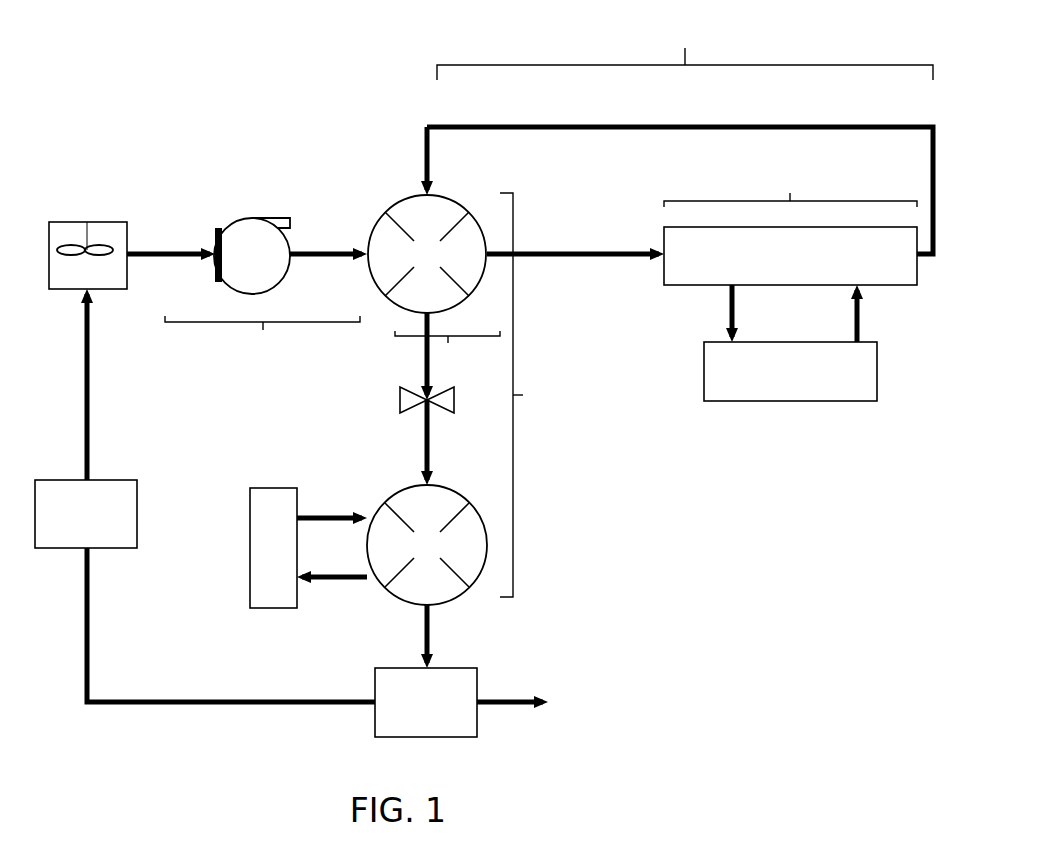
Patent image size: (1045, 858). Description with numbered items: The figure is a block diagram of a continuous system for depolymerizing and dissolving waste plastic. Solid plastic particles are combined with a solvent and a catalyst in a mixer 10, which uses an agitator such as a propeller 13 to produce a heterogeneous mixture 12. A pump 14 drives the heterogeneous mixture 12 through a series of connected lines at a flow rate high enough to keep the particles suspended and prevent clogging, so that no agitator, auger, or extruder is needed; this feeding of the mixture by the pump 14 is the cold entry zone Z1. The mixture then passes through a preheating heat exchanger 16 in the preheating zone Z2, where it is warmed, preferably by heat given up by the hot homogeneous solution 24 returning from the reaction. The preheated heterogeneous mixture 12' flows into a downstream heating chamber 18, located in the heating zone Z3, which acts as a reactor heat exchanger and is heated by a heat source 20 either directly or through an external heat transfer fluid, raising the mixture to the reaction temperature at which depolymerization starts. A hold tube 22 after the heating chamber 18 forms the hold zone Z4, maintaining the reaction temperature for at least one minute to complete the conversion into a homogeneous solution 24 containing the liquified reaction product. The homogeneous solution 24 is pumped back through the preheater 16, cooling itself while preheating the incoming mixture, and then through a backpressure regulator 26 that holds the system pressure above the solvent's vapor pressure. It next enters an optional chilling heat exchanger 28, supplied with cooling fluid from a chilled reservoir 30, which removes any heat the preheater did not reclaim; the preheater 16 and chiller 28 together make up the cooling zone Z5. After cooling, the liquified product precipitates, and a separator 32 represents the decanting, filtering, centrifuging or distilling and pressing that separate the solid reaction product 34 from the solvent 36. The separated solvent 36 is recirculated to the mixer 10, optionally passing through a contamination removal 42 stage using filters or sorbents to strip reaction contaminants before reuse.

The mixer 10 is at (73, 281).
The propeller 13 is at (99, 248).
The heterogeneous mixture 12 is at (247, 230).
The preheated heterogeneous mixture 12' is at (575, 239).
The pump 14 is at (238, 267).
The preheating heat exchanger 16 is at (413, 264).
The heating chamber 18 is at (776, 266).
The heat source 20 is at (776, 382).
The hold tube 22 is at (688, 127).
The homogeneous solution 24 is at (426, 182).
The backpressure regulator 26 is at (400, 400).
The chilling heat exchanger 28 is at (413, 556).
The chilled reservoir 30 is at (259, 556).
The separator 32 is at (413, 714).
The solid reaction product 34 is at (503, 702).
The separated solvent 36 is at (118, 702).
The contamination removal 42 is at (72, 524).
The cold entry zone Z1 is at (262, 341).
The preheating zone Z2 is at (447, 350).
The heating zone Z3 is at (790, 183).
The hold zone Z4 is at (685, 52).
The cooling zone Z5 is at (533, 395).